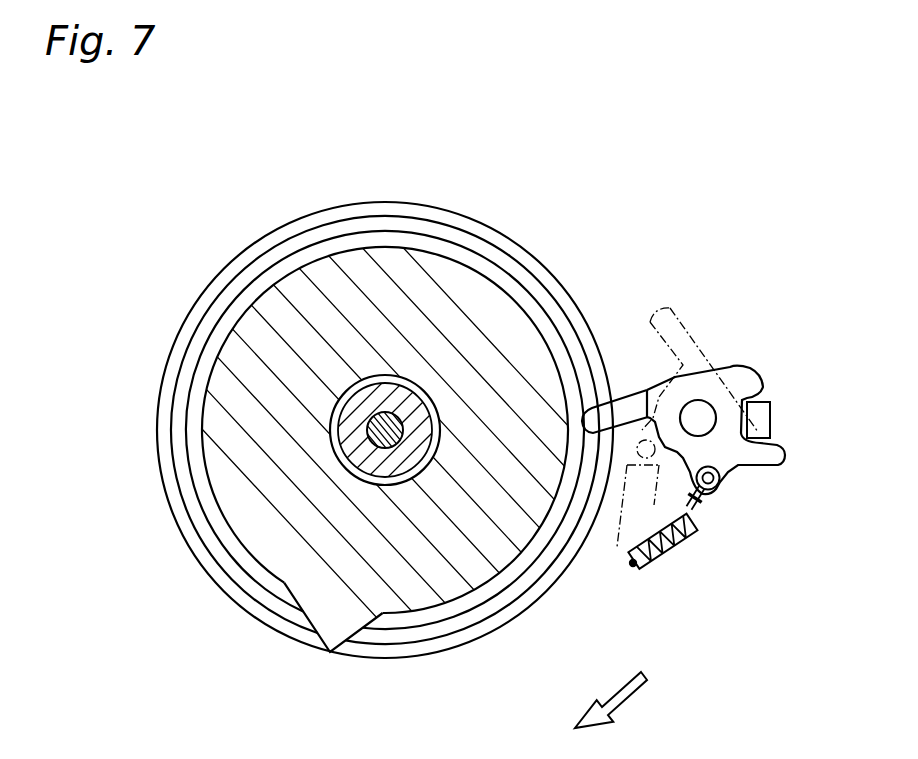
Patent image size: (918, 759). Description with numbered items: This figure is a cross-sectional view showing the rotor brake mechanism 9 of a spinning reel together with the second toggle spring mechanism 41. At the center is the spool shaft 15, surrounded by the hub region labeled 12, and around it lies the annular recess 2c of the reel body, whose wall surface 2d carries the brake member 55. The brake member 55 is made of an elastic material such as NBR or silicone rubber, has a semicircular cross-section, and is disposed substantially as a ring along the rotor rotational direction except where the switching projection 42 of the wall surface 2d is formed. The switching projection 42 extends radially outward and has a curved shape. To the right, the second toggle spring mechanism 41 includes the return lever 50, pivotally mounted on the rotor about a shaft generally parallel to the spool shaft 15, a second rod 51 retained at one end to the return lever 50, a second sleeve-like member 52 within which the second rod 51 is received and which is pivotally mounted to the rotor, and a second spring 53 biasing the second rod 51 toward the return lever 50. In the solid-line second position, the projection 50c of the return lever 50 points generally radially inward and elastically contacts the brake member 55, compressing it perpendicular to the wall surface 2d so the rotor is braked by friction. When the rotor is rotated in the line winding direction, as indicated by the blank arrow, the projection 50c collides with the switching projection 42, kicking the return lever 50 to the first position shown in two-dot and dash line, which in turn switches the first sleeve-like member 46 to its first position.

The rotor brake mechanism 9 is at (599, 270).
The annular recess 2c is at (468, 258).
The wall surface 2d is at (318, 222).
The brake member 55 is at (525, 276).
The bearing hub 12 is at (367, 407).
The spool shaft 15 is at (381, 410).
The switching projection 42 is at (350, 638).
The return lever 50 is at (737, 375).
The projection 50c is at (590, 403).
The first sleeve-like member 46 is at (769, 411).
The second rod 51 is at (672, 572).
The second sleeve-like member 52 is at (663, 577).
The second spring 53 is at (687, 530).
The second toggle spring mechanism 41 is at (730, 534).